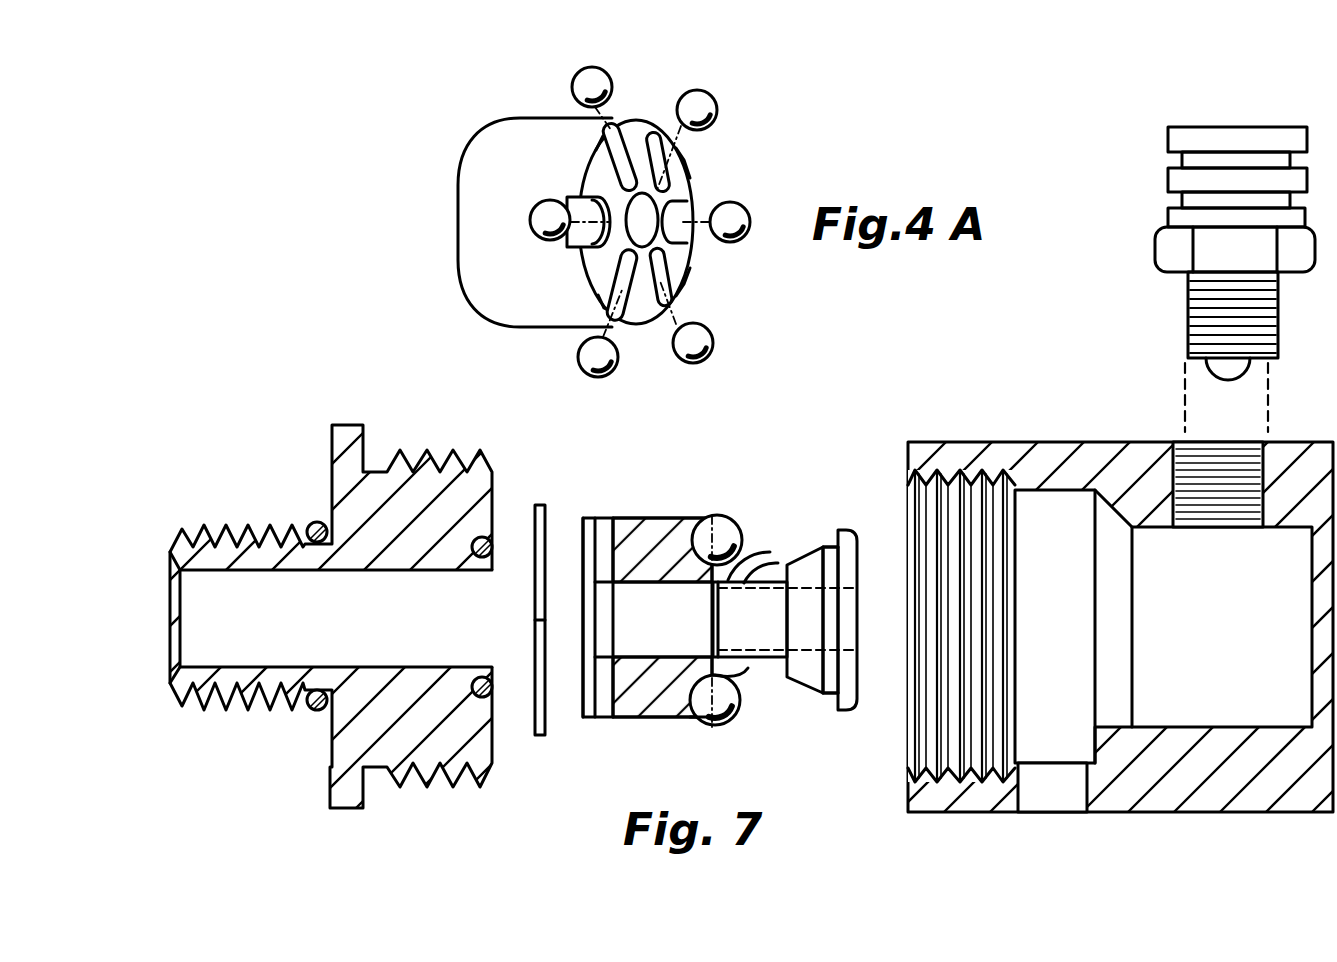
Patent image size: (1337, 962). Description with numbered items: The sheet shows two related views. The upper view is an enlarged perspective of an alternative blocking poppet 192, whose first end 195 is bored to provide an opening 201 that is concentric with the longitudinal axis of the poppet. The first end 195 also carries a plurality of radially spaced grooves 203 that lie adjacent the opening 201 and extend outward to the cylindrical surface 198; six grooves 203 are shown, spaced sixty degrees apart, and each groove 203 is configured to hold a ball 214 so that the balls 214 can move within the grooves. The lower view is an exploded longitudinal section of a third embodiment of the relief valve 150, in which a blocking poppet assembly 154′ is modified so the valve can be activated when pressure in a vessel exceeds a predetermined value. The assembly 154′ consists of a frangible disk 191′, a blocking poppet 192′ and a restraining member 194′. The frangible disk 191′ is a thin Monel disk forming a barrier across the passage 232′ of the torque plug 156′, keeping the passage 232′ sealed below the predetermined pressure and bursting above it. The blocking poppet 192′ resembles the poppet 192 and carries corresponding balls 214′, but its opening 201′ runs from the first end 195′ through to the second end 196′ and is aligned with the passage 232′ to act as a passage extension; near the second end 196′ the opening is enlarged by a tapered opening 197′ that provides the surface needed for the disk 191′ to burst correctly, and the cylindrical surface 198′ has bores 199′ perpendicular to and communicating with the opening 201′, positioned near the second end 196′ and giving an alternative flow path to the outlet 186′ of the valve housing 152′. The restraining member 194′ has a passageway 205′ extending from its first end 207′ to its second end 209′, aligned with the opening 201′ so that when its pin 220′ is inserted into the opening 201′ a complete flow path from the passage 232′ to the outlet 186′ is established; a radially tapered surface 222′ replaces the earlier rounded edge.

In FIG. 4A, the blocking poppet 192 is at (454, 263).
In FIG. 4A, the cylindrical surface 198 is at (522, 135).
In FIG. 4A, the first end 195 is at (684, 268).
In FIG. 4A, the opening 201 is at (651, 212).
In FIG. 4A, the grooves 203 is at (628, 118).
In FIG. 4A, the balls 214 is at (714, 107).
In FIG. 7, the torque plug 156′ is at (342, 816).
In FIG. 7, the passage 232′ is at (333, 617).
In FIG. 7, the frangible disk 191′ is at (540, 505).
In FIG. 7, the blocking poppet 192′ is at (672, 506).
In FIG. 7, the second end 196′ is at (583, 705).
In FIG. 7, the tapered opening 197′ is at (583, 583).
In FIG. 7, the cylindrical surface 198′ is at (630, 717).
In FIG. 7, the bores 199′ is at (602, 518).
In FIG. 7, the opening 201′ is at (653, 619).
In FIG. 7, the balls 214′ is at (721, 521).
In FIG. 7, the pin 220′ is at (752, 619).
In FIG. 7, the passageway 205′ is at (775, 645).
In FIG. 7, the first end 195′ is at (762, 677).
In FIG. 7, the second end 209′ is at (740, 572).
In FIG. 7, the radially tapered surface 222′ is at (812, 682).
In FIG. 7, the first end 207′ is at (852, 705).
In FIG. 7, the restraining member 194′ is at (828, 522).
In FIG. 7, the blocking poppet assembly 154′ is at (709, 728).
In FIG. 7, the relief valve 150 is at (825, 805).
In FIG. 7, the valve housing 152′ is at (1180, 818).
In FIG. 7, the outlet 186′ is at (1037, 813).